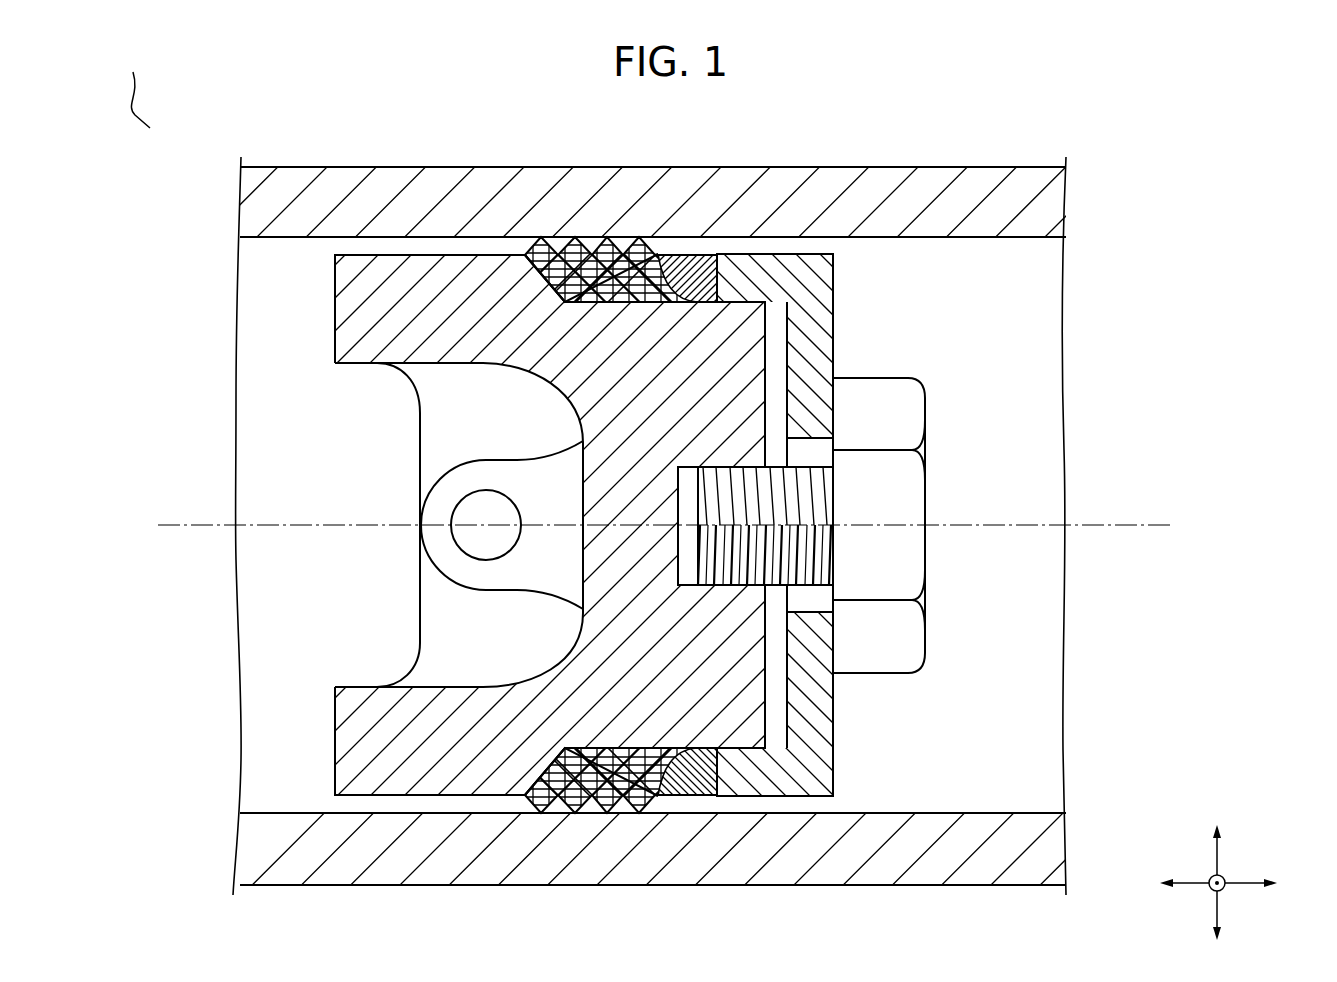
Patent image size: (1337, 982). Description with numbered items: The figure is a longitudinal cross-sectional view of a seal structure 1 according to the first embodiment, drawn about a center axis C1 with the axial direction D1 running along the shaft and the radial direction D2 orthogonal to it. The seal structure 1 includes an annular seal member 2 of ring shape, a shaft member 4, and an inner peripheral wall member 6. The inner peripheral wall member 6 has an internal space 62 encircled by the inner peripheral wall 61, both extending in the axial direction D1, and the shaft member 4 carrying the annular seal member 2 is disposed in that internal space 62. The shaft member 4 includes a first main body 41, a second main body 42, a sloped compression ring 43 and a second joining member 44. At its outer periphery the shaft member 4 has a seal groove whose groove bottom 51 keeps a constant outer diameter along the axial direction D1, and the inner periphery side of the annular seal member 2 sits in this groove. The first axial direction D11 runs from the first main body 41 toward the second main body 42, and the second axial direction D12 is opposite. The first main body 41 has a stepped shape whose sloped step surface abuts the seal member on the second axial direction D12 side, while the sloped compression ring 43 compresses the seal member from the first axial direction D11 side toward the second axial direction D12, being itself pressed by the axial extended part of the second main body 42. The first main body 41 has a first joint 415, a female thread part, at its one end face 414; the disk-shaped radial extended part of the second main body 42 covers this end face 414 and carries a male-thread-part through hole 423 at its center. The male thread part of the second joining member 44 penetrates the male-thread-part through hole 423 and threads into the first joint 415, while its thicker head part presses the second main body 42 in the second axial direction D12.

The seal structure 1 is at (136, 90).
The annular seal member 2 is at (526, 238).
The shaft member 4 is at (357, 378).
The inner peripheral wall member 6 is at (656, 561).
The first main body 41 is at (345, 748).
The second main body 42 is at (754, 525).
The sloped compression ring 43 is at (682, 802).
The second joining member 44 is at (905, 410).
The groove bottom 51 is at (693, 300).
The inner peripheral wall 61 is at (273, 238).
The internal space 62 is at (302, 356).
The one end face 414 is at (778, 725).
The first joint 415 is at (692, 572).
The male-thread-part through hole 423 is at (803, 438).
The central axis C1 is at (178, 525).
The axial direction D1 is at (1237, 887).
The radial direction D2 is at (1218, 862).
The first axial direction D11 is at (1274, 882).
The second axial direction D12 is at (1159, 882).